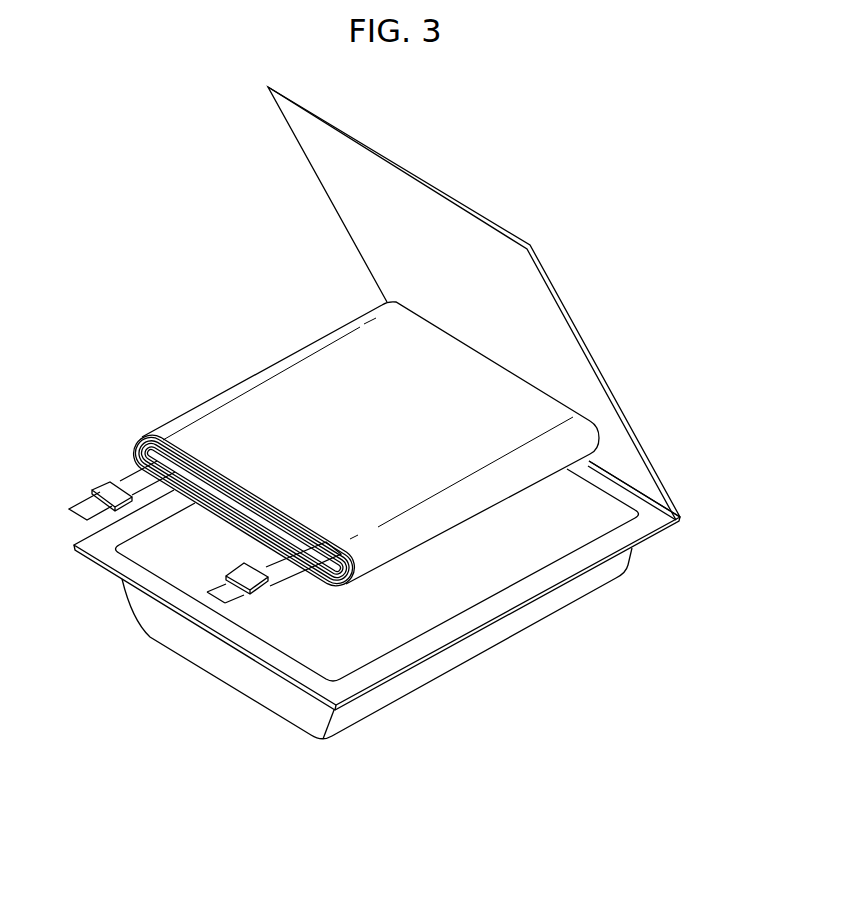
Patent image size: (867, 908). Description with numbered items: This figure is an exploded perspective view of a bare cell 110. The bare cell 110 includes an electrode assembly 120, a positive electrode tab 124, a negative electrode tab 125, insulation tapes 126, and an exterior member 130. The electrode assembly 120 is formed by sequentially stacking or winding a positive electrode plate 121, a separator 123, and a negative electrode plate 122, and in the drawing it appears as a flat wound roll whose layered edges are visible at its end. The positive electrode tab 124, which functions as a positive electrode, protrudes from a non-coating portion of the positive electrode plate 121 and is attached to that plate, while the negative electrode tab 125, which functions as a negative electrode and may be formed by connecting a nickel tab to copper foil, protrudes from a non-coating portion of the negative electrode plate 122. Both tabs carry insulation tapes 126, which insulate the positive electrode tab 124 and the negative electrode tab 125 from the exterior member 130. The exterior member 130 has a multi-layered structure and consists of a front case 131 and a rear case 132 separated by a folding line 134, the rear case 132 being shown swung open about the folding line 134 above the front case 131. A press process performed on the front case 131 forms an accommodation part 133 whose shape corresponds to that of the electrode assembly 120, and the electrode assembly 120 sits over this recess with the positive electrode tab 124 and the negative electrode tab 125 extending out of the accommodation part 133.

The bare cell 110 is at (79, 249).
The electrode assembly 120 is at (234, 345).
The positive electrode plate 121 is at (137, 435).
The negative electrode plate 122 is at (135, 464).
The separator 123 is at (130, 448).
The positive electrode tab 124 is at (138, 490).
The negative electrode tab 125 is at (267, 567).
The insulation tapes 126 is at (104, 488).
The exterior member 130 is at (730, 488).
The front case 131 is at (650, 520).
The rear case 132 is at (647, 480).
The accommodation part 133 is at (488, 577).
The folding line 134 is at (617, 478).